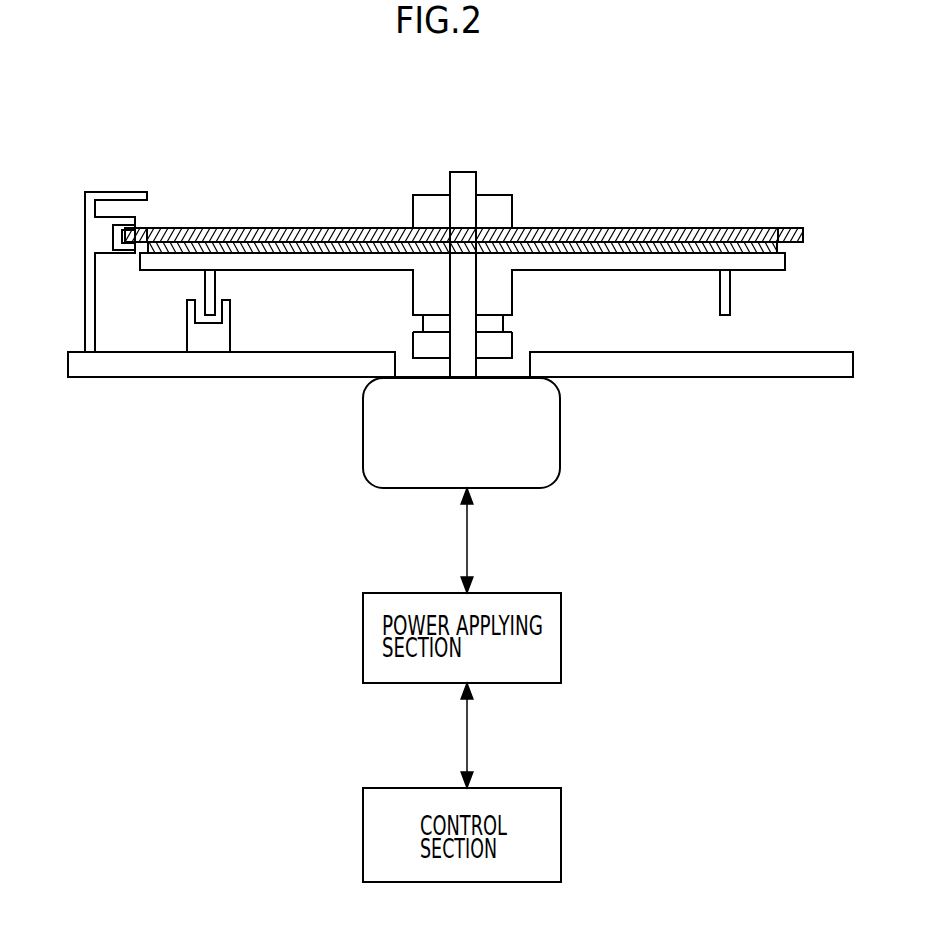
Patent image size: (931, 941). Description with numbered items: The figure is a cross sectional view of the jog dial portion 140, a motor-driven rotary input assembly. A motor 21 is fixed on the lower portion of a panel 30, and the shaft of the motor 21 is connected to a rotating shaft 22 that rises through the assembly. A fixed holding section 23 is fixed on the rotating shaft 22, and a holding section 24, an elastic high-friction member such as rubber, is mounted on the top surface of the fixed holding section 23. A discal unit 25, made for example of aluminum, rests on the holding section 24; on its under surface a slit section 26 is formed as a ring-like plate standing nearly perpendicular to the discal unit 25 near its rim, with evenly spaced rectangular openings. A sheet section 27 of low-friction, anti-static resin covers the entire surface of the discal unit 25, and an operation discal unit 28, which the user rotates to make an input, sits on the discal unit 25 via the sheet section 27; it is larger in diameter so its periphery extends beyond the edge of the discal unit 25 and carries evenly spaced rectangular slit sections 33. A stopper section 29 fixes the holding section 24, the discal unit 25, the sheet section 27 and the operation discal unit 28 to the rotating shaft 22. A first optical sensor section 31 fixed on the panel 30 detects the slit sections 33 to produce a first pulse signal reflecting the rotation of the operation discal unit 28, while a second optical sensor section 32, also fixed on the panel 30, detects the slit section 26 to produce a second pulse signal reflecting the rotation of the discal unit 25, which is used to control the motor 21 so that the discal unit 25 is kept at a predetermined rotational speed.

The jog dial portion 140 is at (243, 153).
The motor 21 is at (560, 433).
The rotating shaft 22 is at (450, 179).
The fixed holding section 23 is at (506, 343).
The holding section 24 is at (430, 322).
The discal unit 25 is at (767, 262).
The slit section 26 is at (205, 287).
The sheet section 27 is at (655, 245).
The operation discal unit 28 is at (297, 228).
The stopper section 29 is at (503, 210).
The panel 30 is at (132, 372).
The first optical sensor section 31 is at (98, 237).
The second optical sensor section 32 is at (220, 333).
The slit section 33 is at (786, 232).